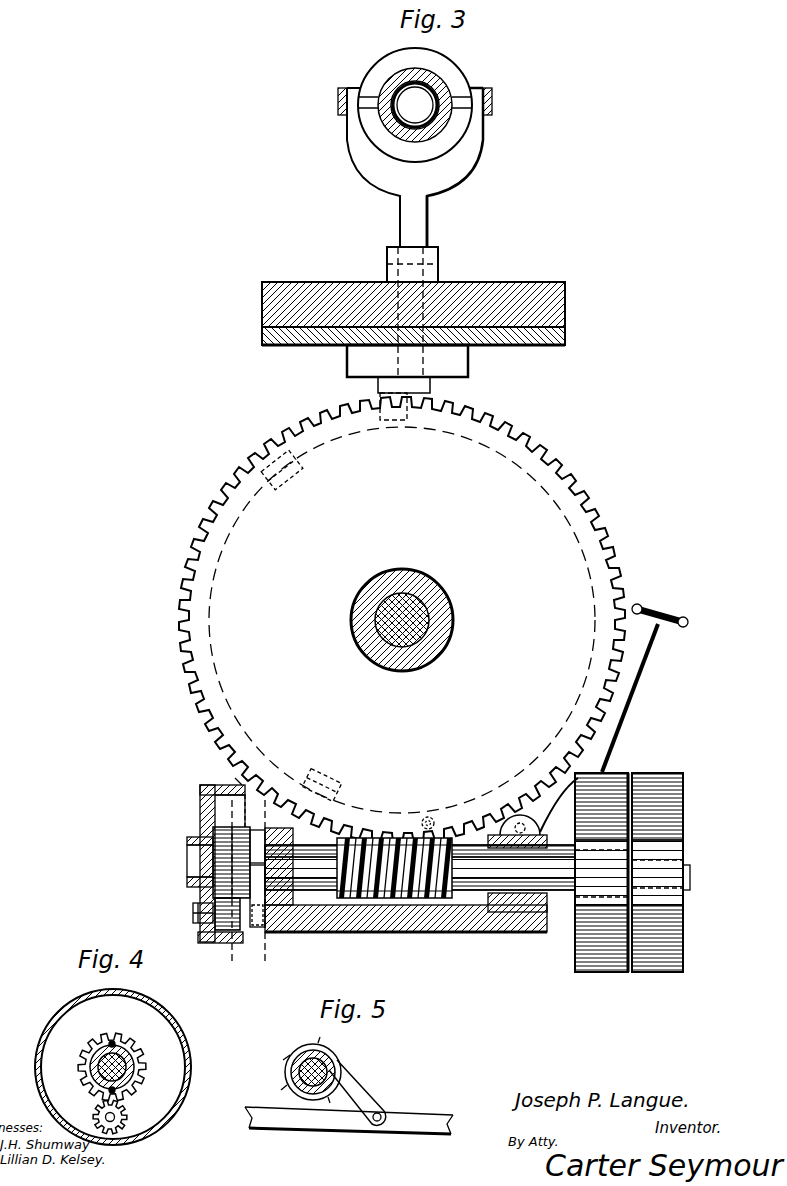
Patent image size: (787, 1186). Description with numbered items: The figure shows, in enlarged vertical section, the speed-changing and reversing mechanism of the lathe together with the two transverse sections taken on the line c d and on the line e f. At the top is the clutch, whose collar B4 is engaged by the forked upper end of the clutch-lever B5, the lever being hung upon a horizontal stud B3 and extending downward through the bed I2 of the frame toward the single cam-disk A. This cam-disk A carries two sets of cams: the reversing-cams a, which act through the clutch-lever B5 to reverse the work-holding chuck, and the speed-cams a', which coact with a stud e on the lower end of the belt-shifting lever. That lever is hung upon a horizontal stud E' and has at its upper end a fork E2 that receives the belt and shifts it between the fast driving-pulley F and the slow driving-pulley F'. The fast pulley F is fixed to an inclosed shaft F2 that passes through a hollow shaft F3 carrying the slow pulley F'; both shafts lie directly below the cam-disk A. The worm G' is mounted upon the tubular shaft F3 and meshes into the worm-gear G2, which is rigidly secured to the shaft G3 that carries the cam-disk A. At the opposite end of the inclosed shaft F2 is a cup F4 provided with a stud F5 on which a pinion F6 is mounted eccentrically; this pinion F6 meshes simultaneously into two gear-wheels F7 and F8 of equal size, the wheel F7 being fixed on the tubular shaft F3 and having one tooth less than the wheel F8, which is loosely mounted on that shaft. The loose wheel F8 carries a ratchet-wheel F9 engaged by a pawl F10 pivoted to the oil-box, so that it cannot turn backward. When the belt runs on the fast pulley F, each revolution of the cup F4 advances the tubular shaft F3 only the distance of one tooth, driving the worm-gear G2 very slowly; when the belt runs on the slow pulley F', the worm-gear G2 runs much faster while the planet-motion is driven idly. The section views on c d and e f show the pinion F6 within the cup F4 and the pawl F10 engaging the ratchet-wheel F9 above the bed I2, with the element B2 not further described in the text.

In FIG. 3, the clutch-lever B5 is at (455, 79).
In FIG. 3, the collar of the clutch B4 is at (455, 100).
In FIG. 3, the connecting shaft B2 is at (430, 237).
In FIG. 3, the horizontal stud B3 is at (438, 266).
In FIG. 3, the bed I2 is at (565, 330).
In FIG. 5, the bed I2 is at (410, 1114).
In FIG. 3, the cam-disk A is at (583, 485).
In FIG. 3, the worm-gear G2 is at (402, 620).
In FIG. 3, the shaft G3 is at (432, 598).
In FIG. 3, the reversing-cams a is at (288, 470).
In FIG. 3, the speed-cams a' is at (327, 781).
In FIG. 3, the fork E2 is at (648, 614).
In FIG. 3, the horizontal stud E' is at (539, 795).
In FIG. 3, the slow driving-pulley F' is at (605, 859).
In FIG. 3, the fast driving-pulley F is at (655, 859).
In FIG. 3, the inclosed shaft F2 is at (688, 856).
In FIG. 4, the inclosed shaft F2 is at (125, 1068).
In FIG. 5, the inclosed shaft F2 is at (290, 1083).
In FIG. 3, the hollow shaft F3 is at (572, 903).
In FIG. 4, the hollow shaft F3 is at (133, 1057).
In FIG. 5, the hollow shaft F3 is at (290, 1069).
In FIG. 3, the worm G' is at (394, 898).
In FIG. 3, the stud e is at (430, 817).
In FIG. 3, the section line c d c is at (233, 774).
In FIG. 3, the cup F4 is at (203, 806).
In FIG. 4, the cup F4 is at (180, 1033).
In FIG. 3, the gear-wheel F8 is at (200, 893).
In FIG. 3, the gear-wheel F7 is at (213, 857).
In FIG. 4, the gear-wheel F7 is at (98, 1040).
In FIG. 3, the pinion F6 is at (222, 932).
In FIG. 4, the pinion F6 is at (128, 1110).
In FIG. 3, the stud F5 is at (197, 918).
In FIG. 4, the stud F5 is at (100, 1118).
In FIG. 3, the ratchet-wheel F9 is at (255, 841).
In FIG. 5, the ratchet-wheel F9 is at (338, 1053).
In FIG. 3, the pawl F10 is at (285, 920).
In FIG. 5, the pawl F10 is at (350, 1078).
In FIG. 3, the section line c d is at (232, 892).
In FIG. 3, the section line e f is at (263, 893).